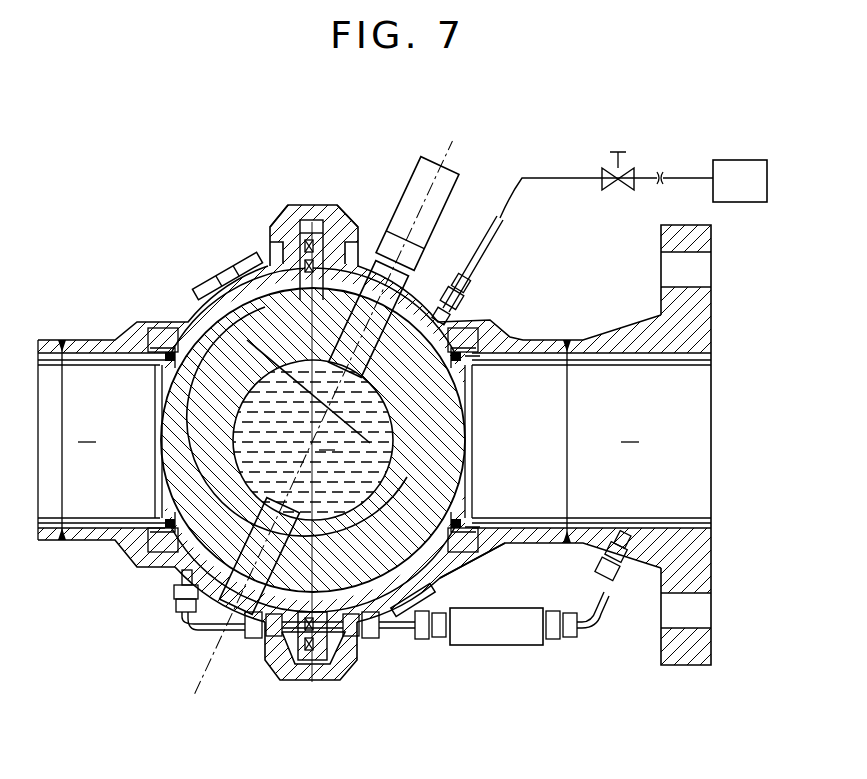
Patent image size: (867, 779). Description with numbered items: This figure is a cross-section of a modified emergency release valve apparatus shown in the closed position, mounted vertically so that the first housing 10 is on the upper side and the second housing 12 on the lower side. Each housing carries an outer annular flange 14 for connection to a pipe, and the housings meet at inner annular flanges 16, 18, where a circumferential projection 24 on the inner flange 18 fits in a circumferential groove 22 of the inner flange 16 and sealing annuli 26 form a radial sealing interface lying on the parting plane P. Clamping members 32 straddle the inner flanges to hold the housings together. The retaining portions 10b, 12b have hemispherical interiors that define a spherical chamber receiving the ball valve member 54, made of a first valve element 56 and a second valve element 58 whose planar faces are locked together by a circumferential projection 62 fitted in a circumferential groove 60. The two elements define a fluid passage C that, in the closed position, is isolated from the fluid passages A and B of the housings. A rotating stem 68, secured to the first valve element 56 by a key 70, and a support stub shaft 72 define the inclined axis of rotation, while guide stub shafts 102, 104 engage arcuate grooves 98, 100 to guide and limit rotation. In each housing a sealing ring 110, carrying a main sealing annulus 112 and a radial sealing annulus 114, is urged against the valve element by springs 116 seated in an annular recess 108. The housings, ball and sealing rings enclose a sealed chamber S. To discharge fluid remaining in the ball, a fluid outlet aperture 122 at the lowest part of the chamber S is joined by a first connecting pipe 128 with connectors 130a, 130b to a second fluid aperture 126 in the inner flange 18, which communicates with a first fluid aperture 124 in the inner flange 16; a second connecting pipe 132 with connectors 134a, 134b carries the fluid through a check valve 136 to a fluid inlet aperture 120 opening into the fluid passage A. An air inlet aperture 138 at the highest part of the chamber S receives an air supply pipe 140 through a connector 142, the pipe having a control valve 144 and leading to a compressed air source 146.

The first tubular housing 10 is at (586, 336).
The retaining portion 10b is at (442, 577).
The second tubular housing 12 is at (92, 334).
The retaining portion 12b is at (205, 290).
The outer annular flange 14 is at (711, 242).
The inner annular flange 16 is at (352, 220).
The inner annular flange 18 is at (272, 232).
The circumferential groove 22 is at (311, 219).
The circumferential projection 24 is at (292, 214).
The sealing annuli 26 is at (303, 246).
The clamping members 32 is at (331, 204).
The ball valve member 54 is at (480, 441).
The first valve element 56 is at (462, 462).
The second valve element 58 is at (163, 436).
The circumferential groove 60 is at (262, 290).
The circumferential projection 62 is at (352, 286).
The rotating stem 68 is at (440, 160).
The key 70 is at (372, 292).
The support stub shaft 72 is at (215, 612).
The groove 98 is at (318, 500).
The groove 100 is at (322, 412).
The guide stub shaft 102 is at (410, 612).
The guide stub shaft 104 is at (236, 276).
The annular recess 108 is at (495, 324).
The sealing ring 110 is at (163, 338).
The main sealing annulus 112 is at (172, 350).
The radial sealing annulus 114 is at (152, 334).
The springs 116 is at (480, 358).
The fluid inlet aperture 120 is at (618, 535).
The fluid outlet aperture 122 is at (172, 570).
The first fluid aperture 124 is at (326, 681).
The second fluid aperture 126 is at (287, 681).
The first connecting pipe 128 is at (197, 627).
The connector 130a is at (178, 594).
The connector 130b is at (262, 638).
The second connecting pipe 132 is at (397, 629).
The connector 134a is at (606, 592).
The connector 134b is at (366, 638).
The check valve 136 is at (495, 646).
The air inlet aperture 138 is at (441, 300).
The air supply pipe 140 is at (471, 262).
The connector 142 is at (455, 300).
The control valve 144 is at (619, 152).
The compressed air source 146 is at (736, 160).
The fluid passage A is at (630, 432).
The fluid passage B is at (87, 432).
The fluid passage C is at (327, 440).
The parting plane P is at (352, 222).
The sealed chamber S is at (248, 608).